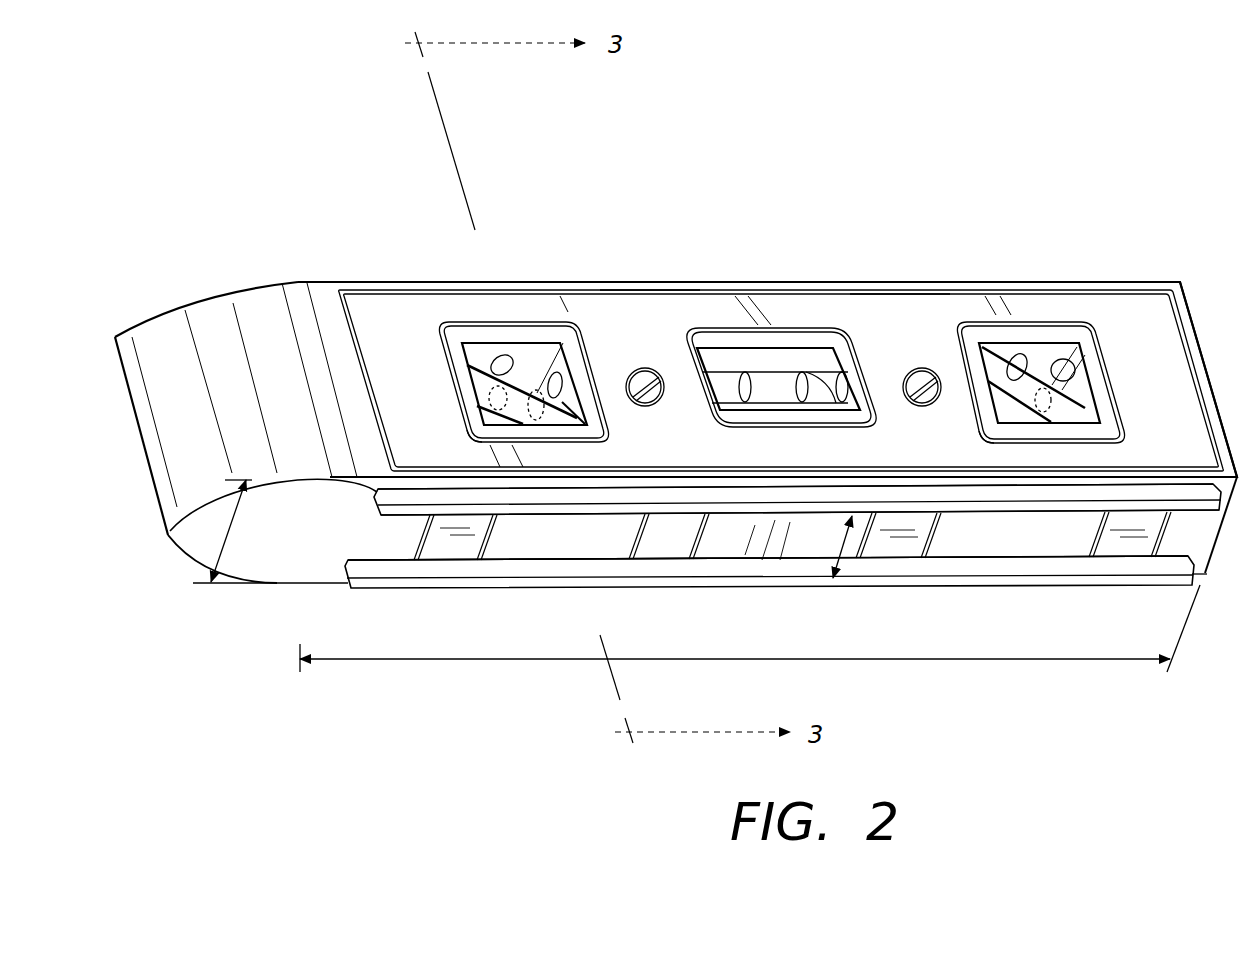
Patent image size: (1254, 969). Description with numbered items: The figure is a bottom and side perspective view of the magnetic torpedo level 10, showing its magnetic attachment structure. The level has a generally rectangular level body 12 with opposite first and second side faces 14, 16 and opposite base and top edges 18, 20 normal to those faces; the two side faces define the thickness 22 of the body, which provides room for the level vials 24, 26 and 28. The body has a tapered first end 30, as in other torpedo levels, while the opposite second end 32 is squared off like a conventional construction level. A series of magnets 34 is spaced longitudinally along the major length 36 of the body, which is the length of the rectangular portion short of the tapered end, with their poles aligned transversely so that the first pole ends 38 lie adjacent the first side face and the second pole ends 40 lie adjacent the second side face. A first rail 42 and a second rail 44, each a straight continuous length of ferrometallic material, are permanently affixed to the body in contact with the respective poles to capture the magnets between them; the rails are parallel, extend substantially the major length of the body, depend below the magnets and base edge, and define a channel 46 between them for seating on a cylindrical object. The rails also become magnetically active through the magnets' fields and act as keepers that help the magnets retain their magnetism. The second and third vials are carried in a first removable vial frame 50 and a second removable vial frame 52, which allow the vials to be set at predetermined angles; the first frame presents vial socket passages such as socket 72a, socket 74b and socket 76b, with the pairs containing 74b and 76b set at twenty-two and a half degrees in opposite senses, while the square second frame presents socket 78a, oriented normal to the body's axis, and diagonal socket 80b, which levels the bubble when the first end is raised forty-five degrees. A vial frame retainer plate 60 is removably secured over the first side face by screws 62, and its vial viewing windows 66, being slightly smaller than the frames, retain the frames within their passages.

The magnetic torpedo level 10 is at (1075, 680).
The level body 12 is at (767, 341).
The first side face 14 is at (315, 307).
The second side face 16 is at (640, 350).
The base edge 18 is at (703, 566).
The top edge 20 is at (866, 300).
The thickness 22 is at (261, 531).
The level vial 24 is at (775, 320).
The second level vial 26 is at (481, 383).
The third level vial 28 is at (1078, 386).
The tapered first end 30 is at (183, 302).
The second end 32 is at (1208, 362).
The magnets 34 is at (487, 532).
The major length 36 is at (750, 650).
The first pole ends 38 is at (690, 515).
The second pole ends 40 is at (878, 558).
The first rail 42 is at (751, 471).
The second rail 44 is at (769, 599).
The channel 46 is at (817, 547).
The first removable vial frame 50 is at (490, 382).
The second removable vial frame 52 is at (1061, 382).
The vial frame retainer plate 60 is at (922, 345).
The screws 62 is at (783, 415).
The vial viewing windows 66 is at (699, 432).
The vial socket passage 72a is at (486, 337).
The vial socket 74b is at (572, 345).
The vial socket 76b is at (613, 435).
The vial socket 78a is at (1039, 337).
The vial socket 80b is at (1107, 346).